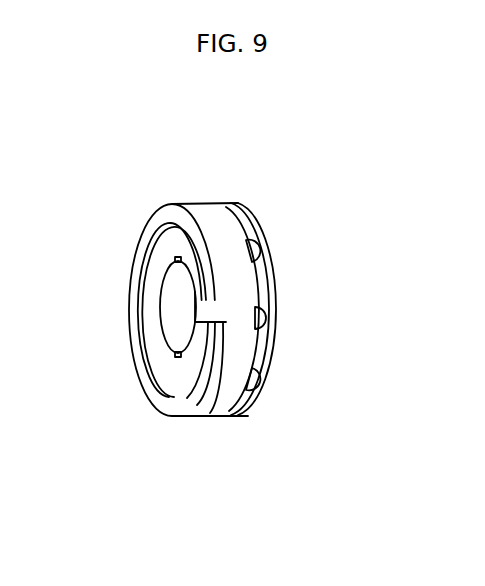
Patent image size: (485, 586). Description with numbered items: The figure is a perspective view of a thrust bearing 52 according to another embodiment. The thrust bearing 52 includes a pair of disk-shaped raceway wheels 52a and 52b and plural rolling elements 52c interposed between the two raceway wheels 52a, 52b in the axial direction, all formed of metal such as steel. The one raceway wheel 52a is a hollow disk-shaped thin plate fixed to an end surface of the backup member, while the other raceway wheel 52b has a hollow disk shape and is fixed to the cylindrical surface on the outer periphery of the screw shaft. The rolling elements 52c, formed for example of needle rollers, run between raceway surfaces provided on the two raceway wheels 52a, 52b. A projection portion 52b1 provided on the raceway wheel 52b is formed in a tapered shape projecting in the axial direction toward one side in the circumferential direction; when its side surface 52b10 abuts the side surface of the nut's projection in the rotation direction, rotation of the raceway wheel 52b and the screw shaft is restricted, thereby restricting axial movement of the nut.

The thrust bearing 52 is at (304, 223).
The raceway wheel 52a is at (276, 272).
The raceway wheel 52b is at (198, 207).
The projection portion 52b1 is at (208, 303).
The side surface 52b10 is at (212, 335).
The rolling element 52c is at (261, 318).